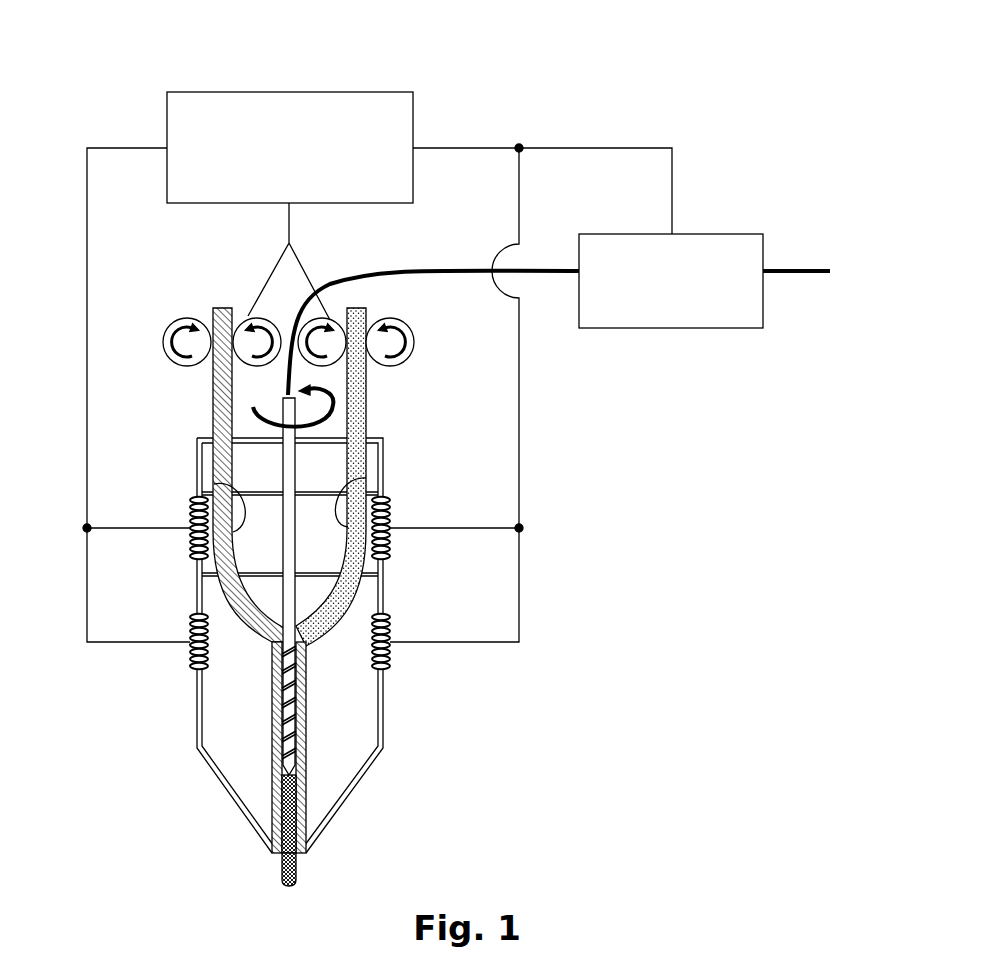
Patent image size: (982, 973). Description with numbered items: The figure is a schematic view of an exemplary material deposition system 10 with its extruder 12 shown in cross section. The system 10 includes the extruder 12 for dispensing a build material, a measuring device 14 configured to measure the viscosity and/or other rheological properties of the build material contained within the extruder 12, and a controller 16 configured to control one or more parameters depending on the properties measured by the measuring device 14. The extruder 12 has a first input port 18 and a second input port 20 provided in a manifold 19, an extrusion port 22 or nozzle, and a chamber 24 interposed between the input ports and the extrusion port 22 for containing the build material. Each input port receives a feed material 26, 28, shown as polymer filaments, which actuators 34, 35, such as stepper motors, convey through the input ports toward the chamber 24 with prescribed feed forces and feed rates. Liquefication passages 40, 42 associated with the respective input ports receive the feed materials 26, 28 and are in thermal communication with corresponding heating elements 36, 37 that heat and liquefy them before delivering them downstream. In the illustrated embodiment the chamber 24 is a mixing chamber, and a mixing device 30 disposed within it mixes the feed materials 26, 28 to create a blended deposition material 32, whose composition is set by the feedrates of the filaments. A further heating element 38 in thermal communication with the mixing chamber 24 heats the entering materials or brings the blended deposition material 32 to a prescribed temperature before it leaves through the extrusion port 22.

The material deposition system 10 is at (622, 78).
The extruder 12 is at (311, 580).
The measuring device 14 is at (675, 307).
The controller 16 is at (207, 105).
The first input port 18 is at (212, 435).
The manifold 19 is at (373, 462).
The second input port 20 is at (366, 434).
The extrusion port 22 is at (278, 857).
The chamber 24 is at (272, 800).
The feed material 26 is at (213, 390).
The feed material 28 is at (366, 380).
The mixing device 30 is at (273, 678).
The blended deposition material 32 is at (296, 810).
The actuator 34 is at (250, 318).
The actuator 35 is at (333, 318).
The heating element 36 is at (190, 533).
The heating element 37 is at (389, 540).
The heating element 38 is at (190, 627).
The liquefication passage 40 is at (212, 486).
The liquefication passage 42 is at (367, 478).